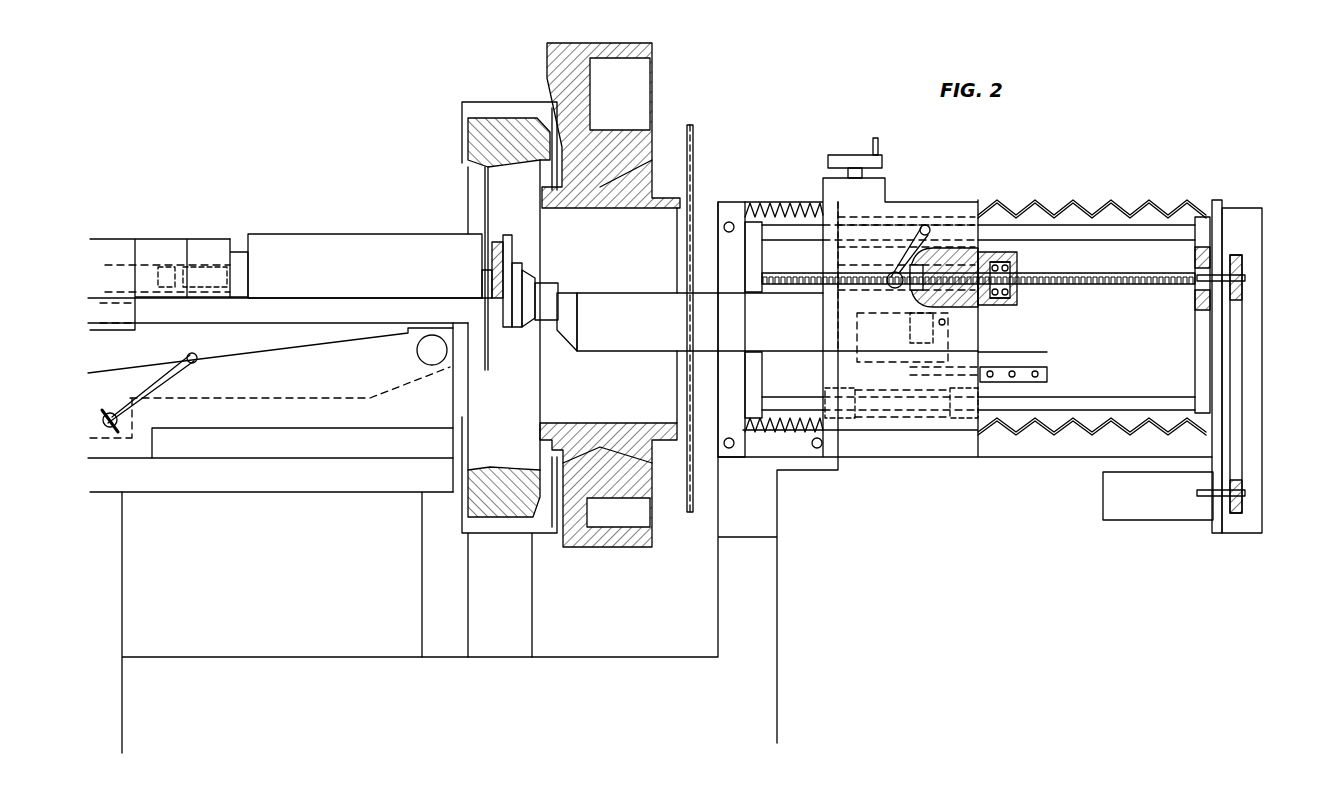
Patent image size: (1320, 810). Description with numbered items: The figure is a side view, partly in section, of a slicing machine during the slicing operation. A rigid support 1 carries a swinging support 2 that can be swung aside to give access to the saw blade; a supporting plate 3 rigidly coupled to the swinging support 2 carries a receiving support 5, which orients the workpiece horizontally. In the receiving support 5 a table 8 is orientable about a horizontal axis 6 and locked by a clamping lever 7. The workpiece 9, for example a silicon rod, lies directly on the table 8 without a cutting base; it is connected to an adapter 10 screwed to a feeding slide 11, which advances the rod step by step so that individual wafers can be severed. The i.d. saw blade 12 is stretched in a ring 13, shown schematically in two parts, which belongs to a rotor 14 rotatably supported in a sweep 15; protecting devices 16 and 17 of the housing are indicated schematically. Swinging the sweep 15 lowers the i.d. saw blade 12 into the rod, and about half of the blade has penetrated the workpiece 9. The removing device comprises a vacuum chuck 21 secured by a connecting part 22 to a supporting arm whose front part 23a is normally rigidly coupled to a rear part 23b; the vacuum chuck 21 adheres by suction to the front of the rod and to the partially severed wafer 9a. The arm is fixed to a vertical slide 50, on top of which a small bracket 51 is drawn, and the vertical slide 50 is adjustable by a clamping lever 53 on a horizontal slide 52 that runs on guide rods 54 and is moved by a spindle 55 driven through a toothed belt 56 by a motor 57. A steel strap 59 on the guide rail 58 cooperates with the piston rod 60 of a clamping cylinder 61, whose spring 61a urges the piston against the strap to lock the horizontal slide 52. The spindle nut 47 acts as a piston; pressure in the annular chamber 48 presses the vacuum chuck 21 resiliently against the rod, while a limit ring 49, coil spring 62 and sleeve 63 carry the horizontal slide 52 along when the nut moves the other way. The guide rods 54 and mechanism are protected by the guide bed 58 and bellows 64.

The rigid support 1 is at (767, 716).
The swinging support 2 is at (136, 549).
The supporting plate 3 is at (367, 470).
The receiving support 5 is at (300, 408).
The horizontal axis 6 is at (430, 360).
The clamping lever 7 is at (112, 395).
The table 8 is at (352, 318).
The workpiece 9 is at (320, 250).
The wafer 9a is at (492, 250).
The adapter 10 is at (243, 253).
The feeding slide 11 is at (111, 258).
The i.d. saw blade 12 is at (488, 423).
The ring 13 is at (507, 510).
The rotor 14 is at (657, 188).
The sweep 15 is at (547, 56).
The protecting device 16 is at (465, 102).
The protecting device 17 is at (695, 513).
The vacuum chuck 21 is at (535, 268).
The connecting part 22 is at (548, 285).
The front part 23a is at (560, 333).
The rear part 23b is at (656, 328).
The spindle nut 47 is at (968, 253).
The annular chamber 48 is at (935, 248).
The limit ring 49 is at (990, 255).
The vertical slide 50 is at (887, 204).
The bracket 51 is at (838, 158).
The horizontal slide 52 is at (913, 430).
The clamping lever 53 is at (888, 285).
The guide rods 54 is at (1125, 235).
The spindle 55 is at (1100, 286).
The toothed belt 56 is at (1237, 358).
The motor 57 is at (1148, 500).
The guide rail 58 is at (1134, 348).
The steel strap 59 is at (1012, 362).
The piston rod 60 is at (948, 332).
The clamping cylinder 61 is at (905, 350).
The spring 61a is at (910, 325).
The coil spring 62 is at (1018, 298).
The sleeve 63 is at (1018, 265).
The bellows 64 is at (785, 205).